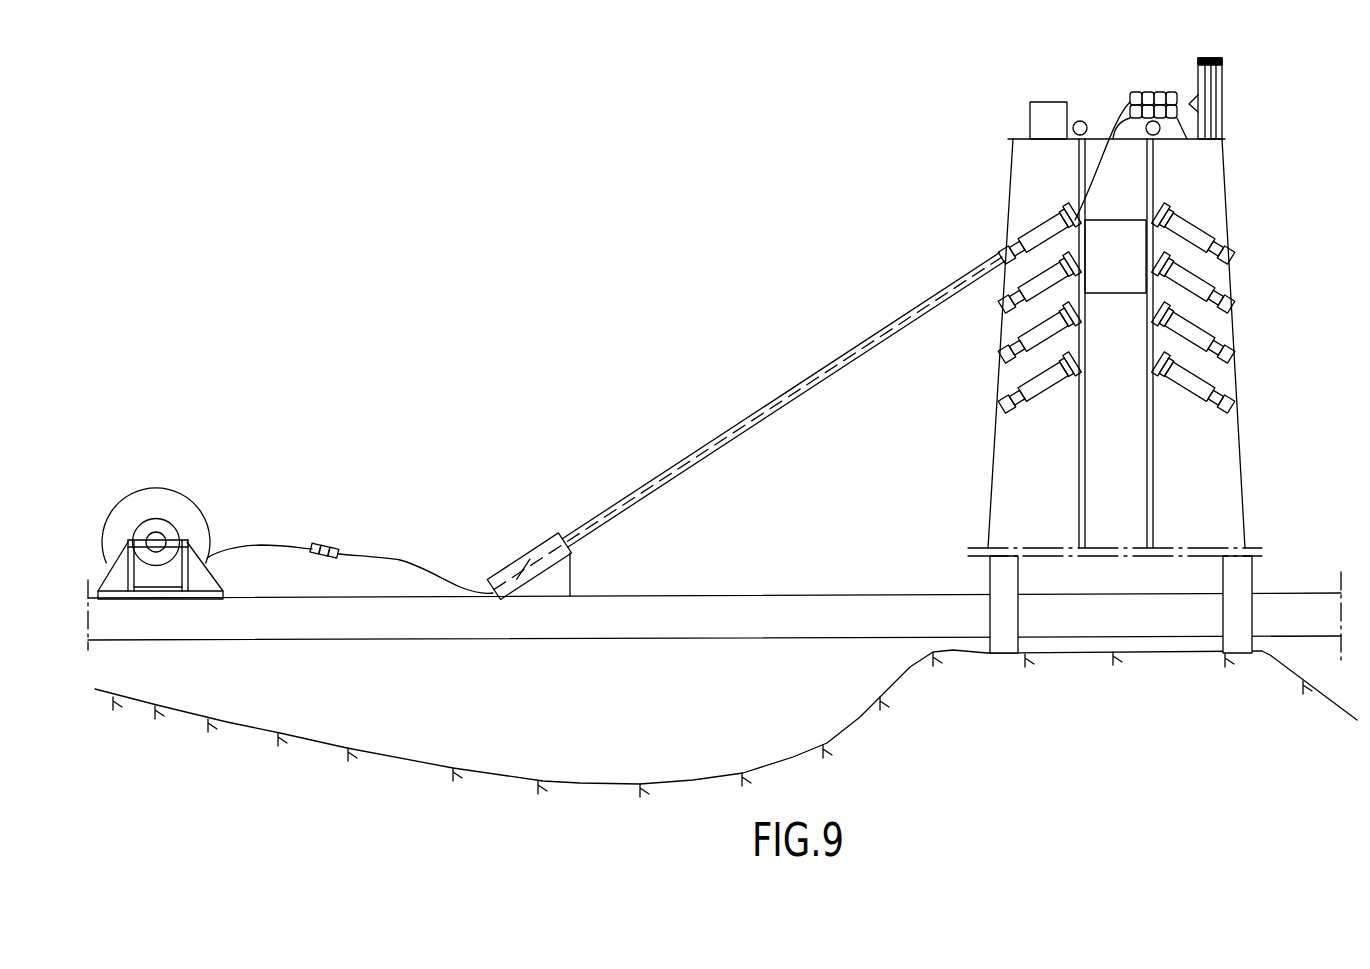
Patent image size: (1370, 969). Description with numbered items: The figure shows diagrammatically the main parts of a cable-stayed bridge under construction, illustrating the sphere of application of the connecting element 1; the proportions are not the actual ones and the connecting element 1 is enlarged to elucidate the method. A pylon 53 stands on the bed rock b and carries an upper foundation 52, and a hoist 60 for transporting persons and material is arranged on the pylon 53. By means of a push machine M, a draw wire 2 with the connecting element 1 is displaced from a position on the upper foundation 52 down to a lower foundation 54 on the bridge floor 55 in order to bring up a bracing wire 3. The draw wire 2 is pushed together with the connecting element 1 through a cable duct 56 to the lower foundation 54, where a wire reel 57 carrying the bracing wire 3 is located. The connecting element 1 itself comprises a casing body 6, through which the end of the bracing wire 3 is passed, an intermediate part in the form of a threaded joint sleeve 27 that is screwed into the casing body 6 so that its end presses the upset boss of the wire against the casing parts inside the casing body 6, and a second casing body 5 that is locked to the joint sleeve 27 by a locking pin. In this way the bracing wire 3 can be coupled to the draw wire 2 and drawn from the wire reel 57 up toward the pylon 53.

The connecting element 1 is at (334, 510).
The draw wire 2 is at (416, 567).
The bracing wire 3 is at (256, 545).
The second casing body 5 is at (340, 552).
The casing body 6 is at (317, 545).
The joint sleeve 27 is at (325, 557).
The upper foundation 52 is at (1028, 215).
The pylon 53 is at (1228, 184).
The lower foundation 54 is at (514, 542).
The bridge floor 55 is at (788, 596).
The cable duct 56 is at (714, 440).
The wire reel 57 is at (157, 488).
The hoist 60 is at (1133, 293).
The push machine M is at (1140, 92).
The bed rock b is at (1032, 749).